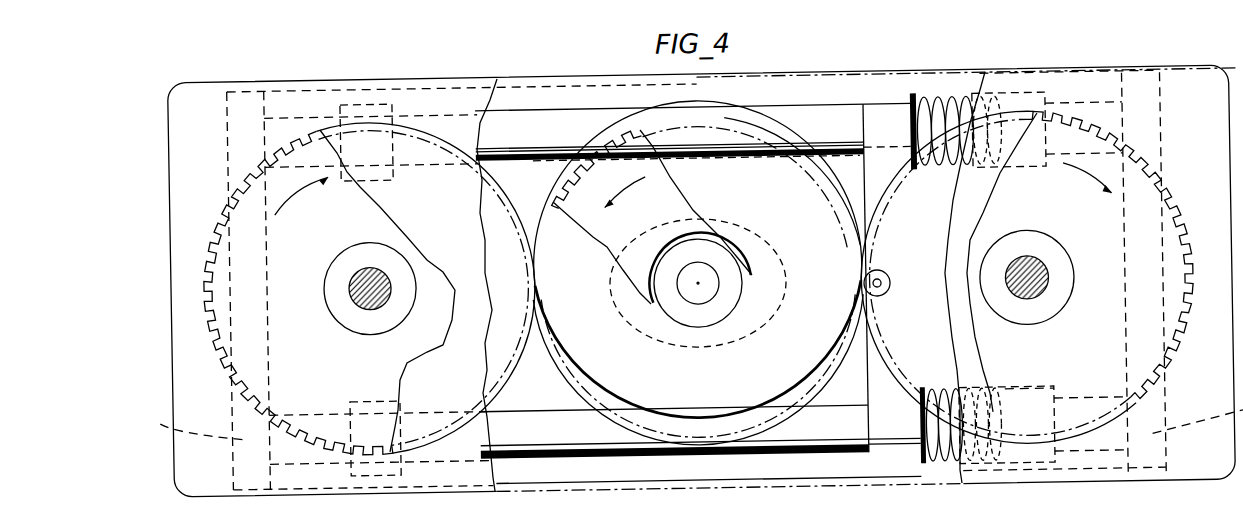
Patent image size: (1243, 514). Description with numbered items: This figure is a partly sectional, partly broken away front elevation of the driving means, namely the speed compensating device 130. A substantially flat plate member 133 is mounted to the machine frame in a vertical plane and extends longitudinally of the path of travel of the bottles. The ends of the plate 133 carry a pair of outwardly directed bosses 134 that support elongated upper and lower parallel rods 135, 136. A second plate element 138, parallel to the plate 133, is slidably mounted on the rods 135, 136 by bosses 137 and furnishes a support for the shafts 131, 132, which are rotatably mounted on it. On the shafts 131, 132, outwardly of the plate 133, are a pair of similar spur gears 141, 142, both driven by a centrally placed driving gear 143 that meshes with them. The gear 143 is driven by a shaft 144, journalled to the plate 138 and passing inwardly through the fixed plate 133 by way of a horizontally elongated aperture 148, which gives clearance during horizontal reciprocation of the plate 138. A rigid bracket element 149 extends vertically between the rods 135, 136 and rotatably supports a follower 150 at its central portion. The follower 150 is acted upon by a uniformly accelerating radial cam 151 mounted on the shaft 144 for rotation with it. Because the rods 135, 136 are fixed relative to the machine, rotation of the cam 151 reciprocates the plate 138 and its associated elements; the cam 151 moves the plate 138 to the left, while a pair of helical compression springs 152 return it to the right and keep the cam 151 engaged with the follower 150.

The speed compensating device 130 is at (163, 196).
The shaft 131 is at (365, 294).
The shaft 132 is at (1040, 276).
The flat plate member 133 is at (623, 66).
The bosses 134 is at (683, 438).
The upper rod 135 is at (536, 117).
The lower rod 136 is at (605, 441).
The bosses 137 is at (384, 108).
The plate element 138 is at (210, 155).
The spur gear 141 is at (312, 264).
The spur gear 142 is at (1095, 344).
The driving gear 143 is at (668, 215).
The shaft 144 is at (705, 295).
The horizontally elongated aperture 148 is at (767, 333).
The rigid bracket element 149 is at (873, 381).
The follower 150 is at (882, 270).
The uniformly accelerating radial cam 151 is at (589, 360).
The helical compression springs 152 is at (938, 104).